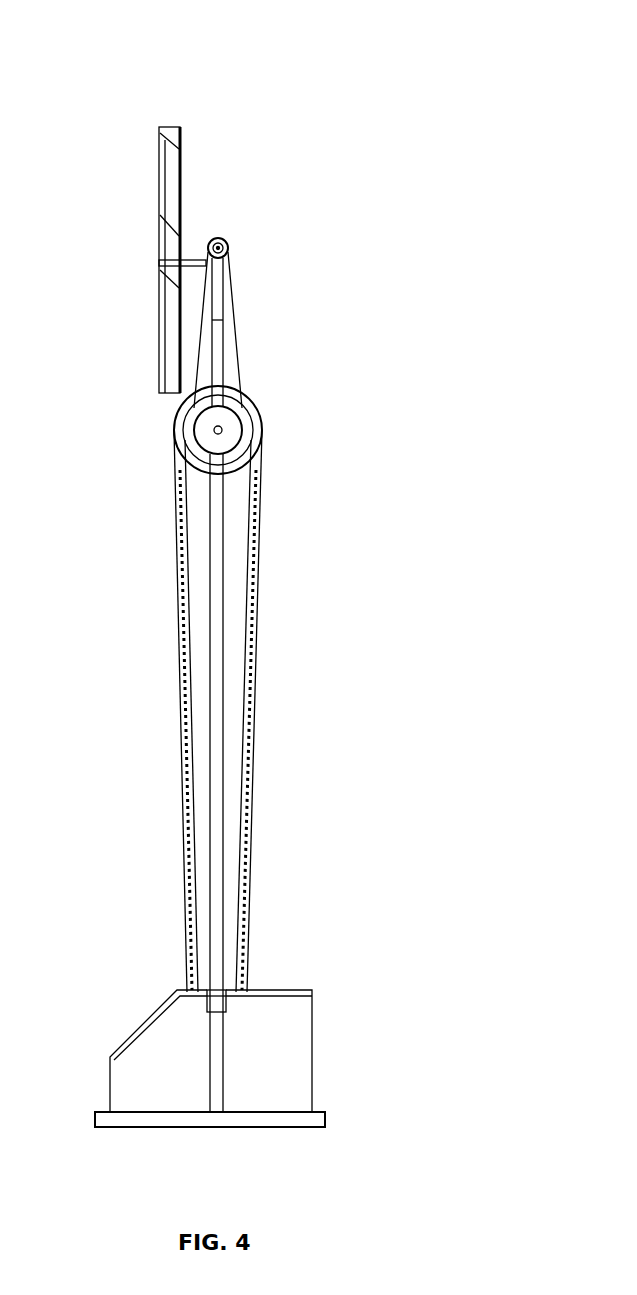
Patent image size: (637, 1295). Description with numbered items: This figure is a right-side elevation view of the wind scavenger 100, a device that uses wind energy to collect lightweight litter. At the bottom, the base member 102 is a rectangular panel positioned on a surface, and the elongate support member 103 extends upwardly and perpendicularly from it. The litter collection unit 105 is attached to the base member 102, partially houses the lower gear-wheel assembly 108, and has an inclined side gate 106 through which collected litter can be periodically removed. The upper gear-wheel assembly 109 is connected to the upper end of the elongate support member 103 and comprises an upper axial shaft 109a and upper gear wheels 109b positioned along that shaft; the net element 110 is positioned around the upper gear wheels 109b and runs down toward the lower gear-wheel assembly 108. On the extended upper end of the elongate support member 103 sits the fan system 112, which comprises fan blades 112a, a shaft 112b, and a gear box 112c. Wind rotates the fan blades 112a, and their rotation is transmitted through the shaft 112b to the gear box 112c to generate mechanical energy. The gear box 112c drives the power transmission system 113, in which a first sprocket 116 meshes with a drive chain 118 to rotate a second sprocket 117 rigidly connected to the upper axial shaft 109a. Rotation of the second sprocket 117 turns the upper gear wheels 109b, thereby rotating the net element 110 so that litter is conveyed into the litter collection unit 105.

The wind scavenger 100 is at (256, 56).
The fan blades 112a is at (184, 149).
The shaft 112b is at (275, 203).
The gear box 112c is at (233, 243).
The fan system 112 is at (386, 107).
The first sprocket 116 is at (228, 254).
The drive chain 118 is at (236, 321).
The power transmission system 113 is at (384, 255).
The second sprocket 117 is at (226, 431).
The upper axial shaft 109a is at (226, 438).
The upper gear wheels 109b is at (244, 463).
The upper gear-wheel assembly 109 is at (407, 467).
The net element 110 is at (262, 620).
The elongate support member 103 is at (228, 1047).
The lower gear-wheel assembly 108 is at (234, 988).
The litter collection unit 105 is at (271, 998).
The side gate 106 is at (152, 1018).
The base member 102 is at (334, 1118).